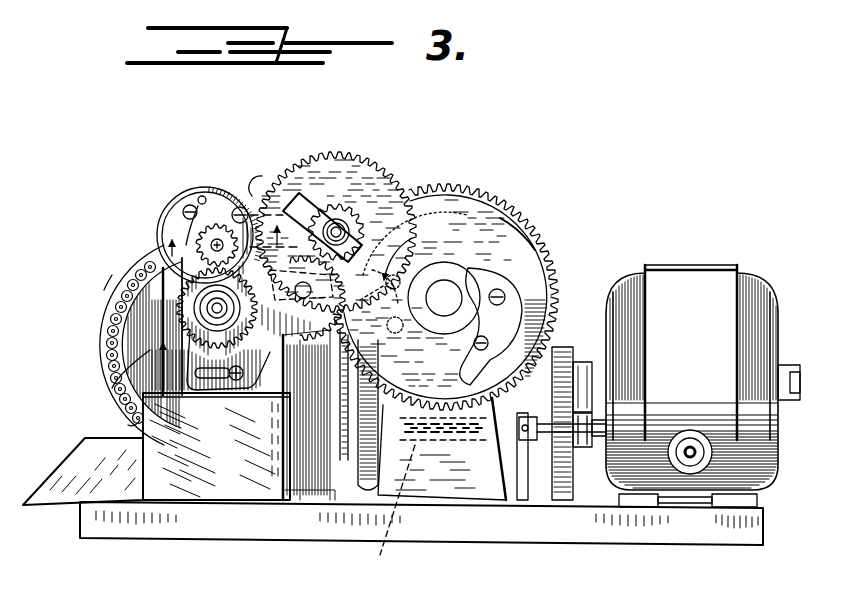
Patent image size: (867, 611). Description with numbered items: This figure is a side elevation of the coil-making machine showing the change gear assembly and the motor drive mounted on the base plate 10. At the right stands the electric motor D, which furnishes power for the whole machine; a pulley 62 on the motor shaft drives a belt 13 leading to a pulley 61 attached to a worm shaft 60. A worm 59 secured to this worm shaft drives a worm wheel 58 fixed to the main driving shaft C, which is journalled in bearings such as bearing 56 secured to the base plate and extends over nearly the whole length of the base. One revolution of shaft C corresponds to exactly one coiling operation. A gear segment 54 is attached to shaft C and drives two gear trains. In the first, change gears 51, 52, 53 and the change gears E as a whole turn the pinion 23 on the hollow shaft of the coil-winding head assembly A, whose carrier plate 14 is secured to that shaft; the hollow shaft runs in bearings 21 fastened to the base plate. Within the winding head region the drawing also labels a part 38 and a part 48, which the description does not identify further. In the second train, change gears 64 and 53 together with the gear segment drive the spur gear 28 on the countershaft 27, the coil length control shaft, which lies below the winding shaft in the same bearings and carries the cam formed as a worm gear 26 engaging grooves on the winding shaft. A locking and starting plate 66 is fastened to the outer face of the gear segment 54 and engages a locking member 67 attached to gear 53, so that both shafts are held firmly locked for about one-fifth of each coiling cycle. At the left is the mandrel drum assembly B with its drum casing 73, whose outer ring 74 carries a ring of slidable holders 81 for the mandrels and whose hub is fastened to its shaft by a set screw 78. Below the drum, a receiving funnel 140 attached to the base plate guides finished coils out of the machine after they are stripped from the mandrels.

The base plate 10 is at (712, 540).
The belt 13 is at (553, 483).
The carrier plate 14 is at (215, 188).
The bearings 21 is at (192, 263).
The pinion 23 is at (192, 222).
The worm gear 26 is at (205, 310).
The countershaft 27 is at (195, 318).
The spur gear 28 is at (190, 328).
The screw 38 is at (200, 243).
The pinion 48 is at (207, 238).
The change gear 51 is at (251, 184).
The change gear 52 is at (312, 168).
The change gear 53 is at (348, 205).
The gear segment 54 is at (505, 197).
The bearing 56 is at (452, 488).
The worm wheel 58 is at (520, 245).
The worm 59 is at (424, 502).
The worm shaft 60 is at (546, 432).
The pulley 61 is at (576, 486).
The pulley 62 is at (582, 368).
The change gear 64 is at (253, 385).
The locking and starting plate 66 is at (487, 226).
The locking member 67 is at (305, 207).
The drum casing 73 is at (120, 282).
The outer ring 74 is at (118, 303).
The set screw 78 is at (112, 388).
The holders 81 is at (190, 262).
The receiving funnel 140 is at (65, 497).
The coil-winding head assembly A is at (173, 200).
The mandrel drum assembly B is at (100, 385).
The main driving shaft C is at (450, 296).
The electric motor D is at (710, 265).
The change gears E is at (433, 182).